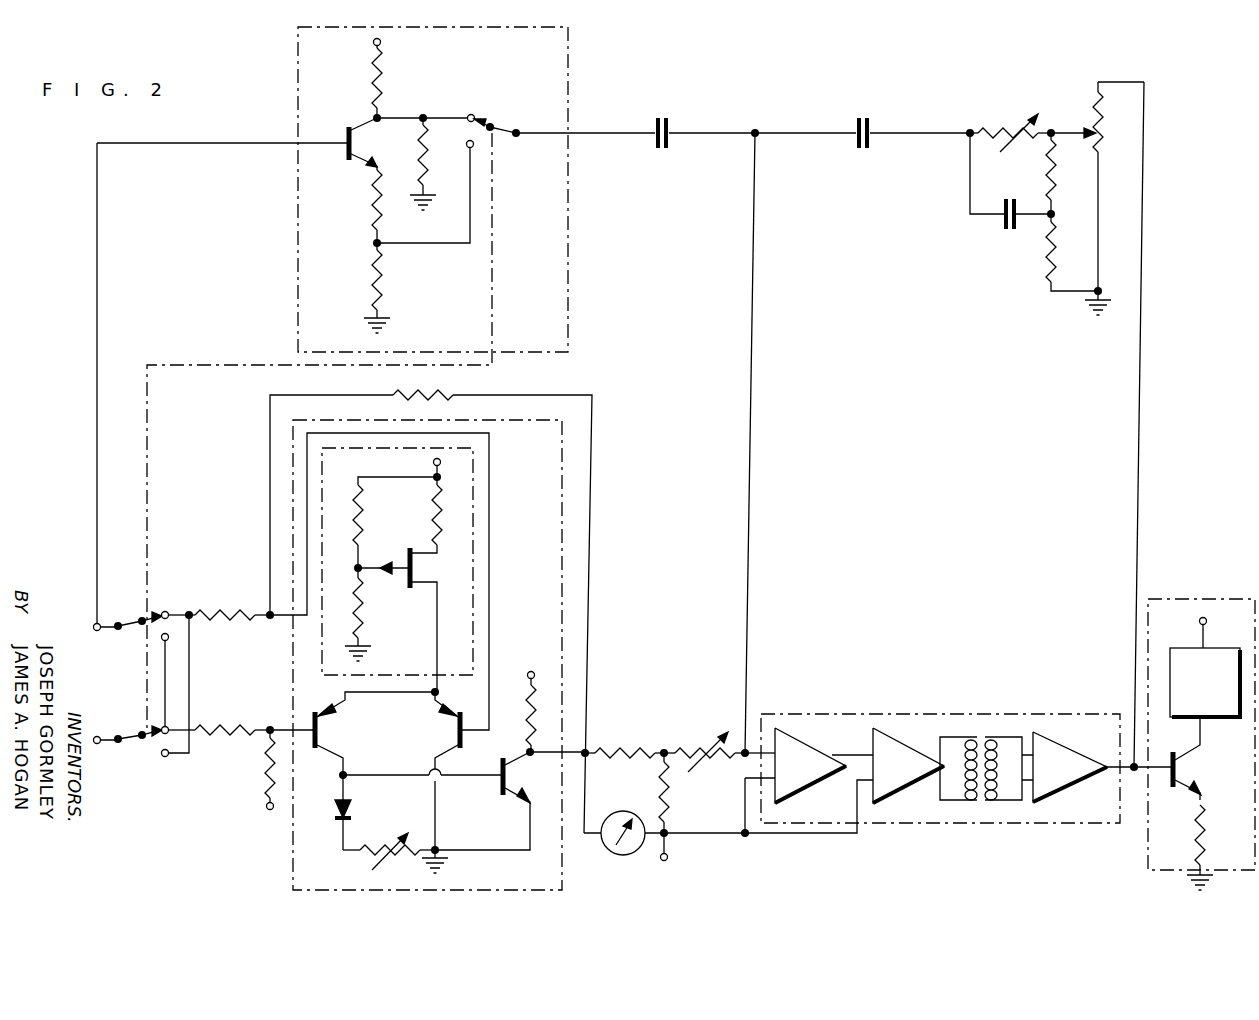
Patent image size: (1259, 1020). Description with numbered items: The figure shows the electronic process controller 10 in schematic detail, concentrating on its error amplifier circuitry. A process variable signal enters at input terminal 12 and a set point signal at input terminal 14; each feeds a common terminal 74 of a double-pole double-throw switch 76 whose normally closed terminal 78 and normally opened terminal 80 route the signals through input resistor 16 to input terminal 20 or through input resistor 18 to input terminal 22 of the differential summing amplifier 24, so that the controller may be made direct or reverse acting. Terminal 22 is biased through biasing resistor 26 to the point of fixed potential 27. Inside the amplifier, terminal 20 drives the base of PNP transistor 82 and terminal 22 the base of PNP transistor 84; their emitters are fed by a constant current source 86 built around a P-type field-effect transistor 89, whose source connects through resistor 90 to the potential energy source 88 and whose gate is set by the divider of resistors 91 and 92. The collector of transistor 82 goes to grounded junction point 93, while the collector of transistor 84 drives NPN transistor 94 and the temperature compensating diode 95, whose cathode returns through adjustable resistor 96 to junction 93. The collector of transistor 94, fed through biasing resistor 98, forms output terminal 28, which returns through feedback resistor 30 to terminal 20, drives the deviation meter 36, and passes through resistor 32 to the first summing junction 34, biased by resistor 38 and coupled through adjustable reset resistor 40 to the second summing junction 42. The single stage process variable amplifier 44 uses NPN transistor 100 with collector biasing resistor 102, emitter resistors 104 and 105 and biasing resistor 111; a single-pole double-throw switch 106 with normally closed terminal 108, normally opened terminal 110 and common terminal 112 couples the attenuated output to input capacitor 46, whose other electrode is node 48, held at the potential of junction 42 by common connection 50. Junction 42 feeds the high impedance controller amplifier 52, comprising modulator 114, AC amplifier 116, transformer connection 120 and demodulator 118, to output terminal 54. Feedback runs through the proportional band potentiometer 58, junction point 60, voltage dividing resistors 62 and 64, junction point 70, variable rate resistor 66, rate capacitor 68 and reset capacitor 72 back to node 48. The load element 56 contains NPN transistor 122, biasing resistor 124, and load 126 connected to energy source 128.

The electronic process controller 10 is at (85, 236).
The input terminal 12 is at (98, 632).
The input terminal 14 is at (97, 736).
The input resistor 16 is at (234, 610).
The input resistor 18 is at (236, 724).
The input terminal 20 is at (270, 620).
The input terminal 22 is at (270, 726).
The differential summing amplifier 24 is at (562, 550).
The biasing resistor 26 is at (265, 768).
The point of fixed potential 27 is at (270, 810).
The output terminal 28 is at (588, 748).
The feedback resistor 30 is at (428, 392).
The resistor 32 is at (630, 758).
The first summing junction 34 is at (664, 748).
The deviation meter 36 is at (623, 852).
The biasing resistor 38 is at (670, 800).
The adjustable reset resistor 40 is at (710, 758).
The second summing junction 42 is at (740, 748).
The single stage process variable amplifier 44 is at (568, 75).
The input capacitor 46 is at (660, 150).
The node 48 is at (755, 128).
The common connection 50 is at (751, 418).
The high impedance controller amplifier 52 is at (920, 710).
The output terminal 54 is at (1134, 772).
The load element 56 is at (1208, 588).
The adjustable proportional band potentiometer 58 is at (1103, 145).
The junction point 60 is at (1102, 290).
The voltage dividing resistor 62 is at (1056, 258).
The voltage dividing resistor 64 is at (1045, 172).
The variable rate resistor 66 is at (1006, 130).
The rate capacitor 68 is at (1008, 232).
The junction point 70 is at (1055, 214).
The reset capacitor 72 is at (862, 150).
The common terminal 74 is at (118, 622).
The double-pole double-throw switch 76 is at (135, 615).
The normally closed terminal 78 is at (166, 611).
The normally opened terminal 80 is at (161, 640).
The PNP transistor 82 is at (456, 730).
The PNP transistor 84 is at (320, 730).
The constant current source 86 is at (473, 498).
The potential energy source 88 is at (381, 42).
The P-type field-effect transistor 89 is at (414, 566).
The resistor 90 is at (433, 520).
The resistor 91 is at (355, 528).
The resistor 92 is at (362, 610).
The junction point 93 is at (440, 848).
The NPN transistor 94 is at (506, 777).
The temperature compensating diode 95 is at (352, 808).
The adjustable resistor 96 is at (392, 858).
The biasing resistor 98 is at (526, 716).
The NPN transistor 100 is at (348, 128).
The biasing resistor 102 is at (373, 85).
The biasing resistor 104 is at (372, 210).
The biasing resistor 105 is at (374, 287).
The single-pole double-throw switch 106 is at (498, 124).
The normally closed terminal 108 is at (471, 114).
The normally opened terminal 110 is at (470, 146).
The biasing resistor 111 is at (420, 158).
The common terminal 112 is at (517, 137).
The modulator 114 is at (800, 748).
The AC amplifier 116 is at (892, 748).
The demodulator 118 is at (1062, 750).
The transformer connection 120 is at (980, 798).
The NPN transistor 122 is at (1178, 768).
The biasing resistor 124 is at (1197, 830).
The load 126 is at (1212, 652).
The energy source 128 is at (1198, 620).